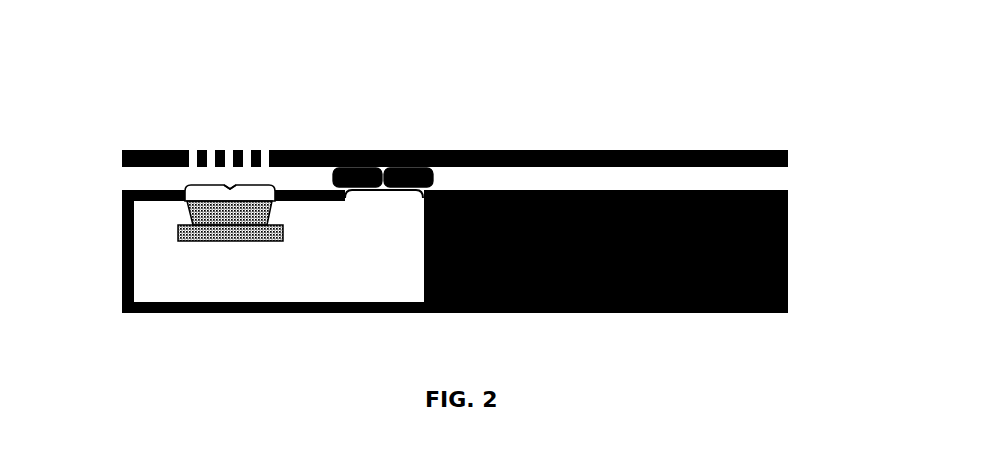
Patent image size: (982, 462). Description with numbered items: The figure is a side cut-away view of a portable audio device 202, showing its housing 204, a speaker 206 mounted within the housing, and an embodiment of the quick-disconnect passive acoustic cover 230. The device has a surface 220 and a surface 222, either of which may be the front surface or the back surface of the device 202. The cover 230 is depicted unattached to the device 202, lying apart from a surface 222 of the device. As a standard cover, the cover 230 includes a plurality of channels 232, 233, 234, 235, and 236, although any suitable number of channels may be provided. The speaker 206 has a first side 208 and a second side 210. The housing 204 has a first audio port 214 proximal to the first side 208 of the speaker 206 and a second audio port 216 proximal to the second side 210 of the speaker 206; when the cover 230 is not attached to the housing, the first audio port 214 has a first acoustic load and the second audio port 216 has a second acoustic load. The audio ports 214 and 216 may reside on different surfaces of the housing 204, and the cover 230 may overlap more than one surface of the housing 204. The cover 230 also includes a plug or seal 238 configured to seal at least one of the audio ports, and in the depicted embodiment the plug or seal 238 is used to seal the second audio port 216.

The portable audio device 202 is at (777, 88).
The housing 204 is at (788, 212).
The speaker 206 is at (178, 228).
The first side of the speaker 208 is at (235, 200).
The second side of the speaker 210 is at (217, 241).
The first audio port 214 is at (228, 186).
The second audio port 216 is at (393, 150).
The surface 220 is at (537, 190).
The surface 222 is at (753, 313).
The quick-disconnect passive acoustic cover 230 is at (763, 150).
The channel 232 is at (193, 148).
The channel 233 is at (209, 148).
The channel 234 is at (228, 148).
The channel 235 is at (249, 148).
The channel 236 is at (266, 148).
The plug or seal 238 is at (425, 150).